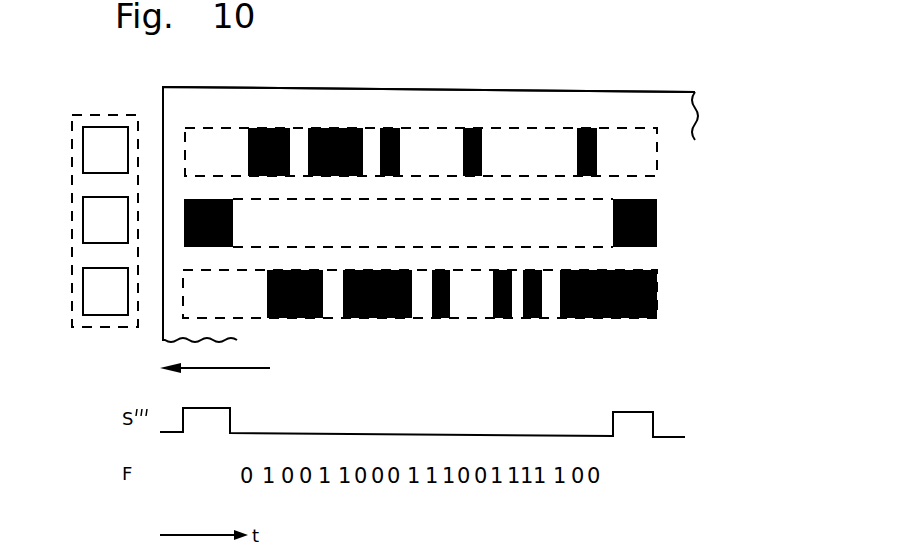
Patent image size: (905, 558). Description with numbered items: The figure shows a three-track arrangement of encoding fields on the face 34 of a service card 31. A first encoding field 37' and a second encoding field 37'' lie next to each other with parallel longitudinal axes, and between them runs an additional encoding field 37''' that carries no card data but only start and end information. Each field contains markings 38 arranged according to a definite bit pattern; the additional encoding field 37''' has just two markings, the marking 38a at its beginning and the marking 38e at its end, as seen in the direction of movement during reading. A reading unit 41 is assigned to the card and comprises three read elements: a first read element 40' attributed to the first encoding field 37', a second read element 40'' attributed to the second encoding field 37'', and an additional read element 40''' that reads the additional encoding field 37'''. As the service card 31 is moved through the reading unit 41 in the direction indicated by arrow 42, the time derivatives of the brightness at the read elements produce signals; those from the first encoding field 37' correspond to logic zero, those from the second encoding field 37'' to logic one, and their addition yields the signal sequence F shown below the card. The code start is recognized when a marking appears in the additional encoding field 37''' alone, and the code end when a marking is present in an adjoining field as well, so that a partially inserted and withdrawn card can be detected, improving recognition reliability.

The service card 31 is at (193, 81).
The face 34 is at (327, 100).
The first encoding field 37' is at (471, 152).
The second encoding field 37'' is at (471, 294).
The additional encoding field 37''' is at (473, 231).
The markings 38 is at (437, 270).
The marking at the beginning 38a is at (211, 198).
The marking at the end 38e is at (622, 200).
The first read element 40' is at (72, 150).
The second read element 40'' is at (73, 290).
The additional read element 40''' is at (72, 220).
The reading unit 41 is at (80, 119).
The arrow 42 is at (217, 367).